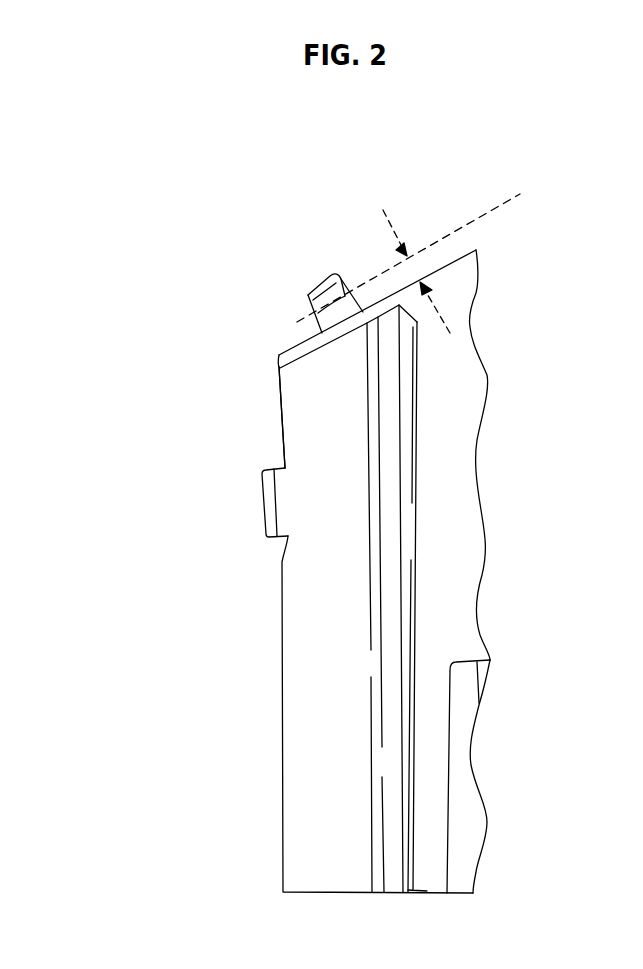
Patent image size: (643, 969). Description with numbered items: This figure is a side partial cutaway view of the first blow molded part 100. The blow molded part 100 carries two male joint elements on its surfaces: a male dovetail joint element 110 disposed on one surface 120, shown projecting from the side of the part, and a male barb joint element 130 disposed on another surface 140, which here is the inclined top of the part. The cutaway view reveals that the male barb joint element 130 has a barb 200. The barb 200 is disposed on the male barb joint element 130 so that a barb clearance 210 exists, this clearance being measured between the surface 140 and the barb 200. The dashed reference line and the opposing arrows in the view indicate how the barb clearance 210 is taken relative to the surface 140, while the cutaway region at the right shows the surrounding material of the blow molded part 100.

The first blow molded part 100 is at (228, 145).
The male dovetail joint element 110 is at (262, 495).
The surface 120 is at (277, 416).
The male barb joint element 130 is at (324, 284).
The surface 140 is at (297, 348).
The barb 200 is at (328, 290).
The barb clearance 210 is at (443, 312).